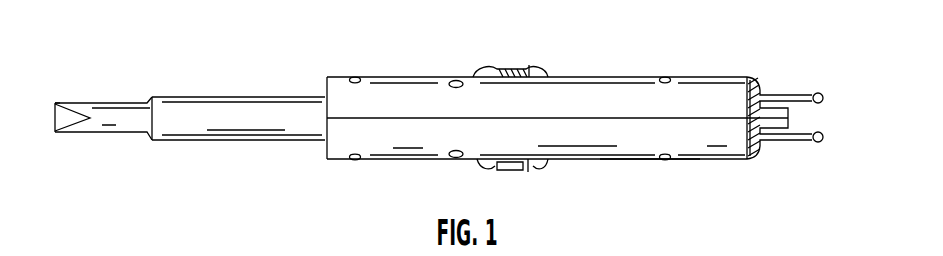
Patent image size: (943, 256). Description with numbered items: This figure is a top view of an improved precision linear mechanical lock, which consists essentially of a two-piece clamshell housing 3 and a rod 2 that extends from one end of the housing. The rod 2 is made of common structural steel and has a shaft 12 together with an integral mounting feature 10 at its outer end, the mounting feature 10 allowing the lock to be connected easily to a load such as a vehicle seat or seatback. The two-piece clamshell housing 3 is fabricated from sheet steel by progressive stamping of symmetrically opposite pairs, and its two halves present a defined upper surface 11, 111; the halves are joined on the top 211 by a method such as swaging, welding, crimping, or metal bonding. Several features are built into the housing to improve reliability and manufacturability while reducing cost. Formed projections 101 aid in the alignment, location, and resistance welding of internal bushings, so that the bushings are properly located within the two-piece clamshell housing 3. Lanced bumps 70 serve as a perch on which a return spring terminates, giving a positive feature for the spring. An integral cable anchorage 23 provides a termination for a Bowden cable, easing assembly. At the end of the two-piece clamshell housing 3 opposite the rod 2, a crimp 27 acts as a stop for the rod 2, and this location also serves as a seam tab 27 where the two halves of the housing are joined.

The rod 2 is at (55, 105).
The integral mounting feature 10 is at (70, 121).
The shaft 12 is at (237, 123).
The upper surface of housing half 11 is at (598, 97).
The upper surface of housing half 111 is at (633, 143).
The top joint 211 is at (690, 116).
The formed projections 101 is at (355, 161).
The lanced bumps 70 is at (457, 161).
The integral cable anchorage 23 is at (510, 70).
The two-piece clamshell housing 3 is at (697, 160).
The crimp / seam tab 27 is at (789, 110).